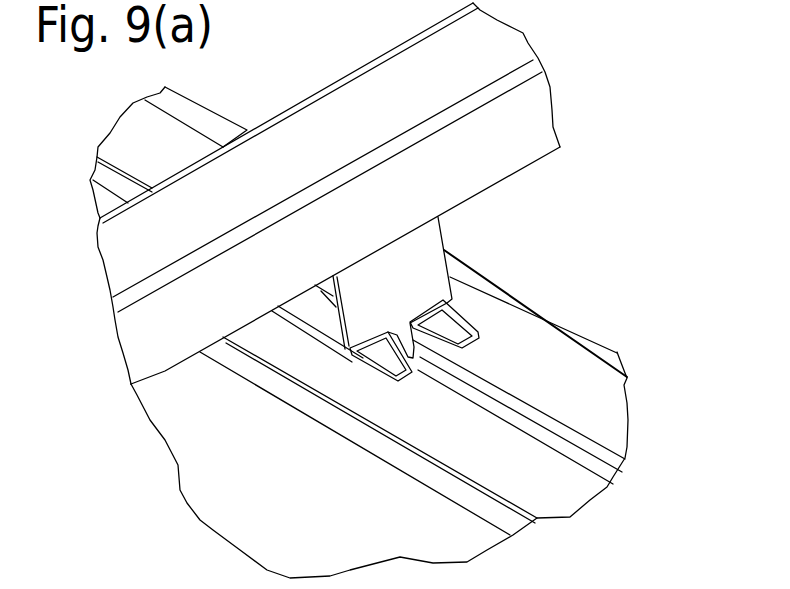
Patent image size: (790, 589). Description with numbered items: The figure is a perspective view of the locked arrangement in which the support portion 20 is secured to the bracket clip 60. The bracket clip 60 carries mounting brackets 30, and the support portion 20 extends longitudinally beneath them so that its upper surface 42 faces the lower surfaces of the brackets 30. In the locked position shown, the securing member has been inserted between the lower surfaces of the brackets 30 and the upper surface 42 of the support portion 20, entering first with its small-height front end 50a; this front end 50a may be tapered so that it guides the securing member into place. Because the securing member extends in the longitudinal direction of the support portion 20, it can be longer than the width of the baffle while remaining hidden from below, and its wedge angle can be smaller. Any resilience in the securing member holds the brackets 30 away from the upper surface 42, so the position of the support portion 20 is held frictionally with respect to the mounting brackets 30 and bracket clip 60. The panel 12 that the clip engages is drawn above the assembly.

The panel 12 is at (457, 66).
The support portion 20 is at (230, 492).
The mounting bracket 30 is at (402, 279).
The upper surface of the support portion 42 is at (555, 380).
The front end of the securing member 50a is at (456, 324).
The bracket clip 60 is at (486, 222).